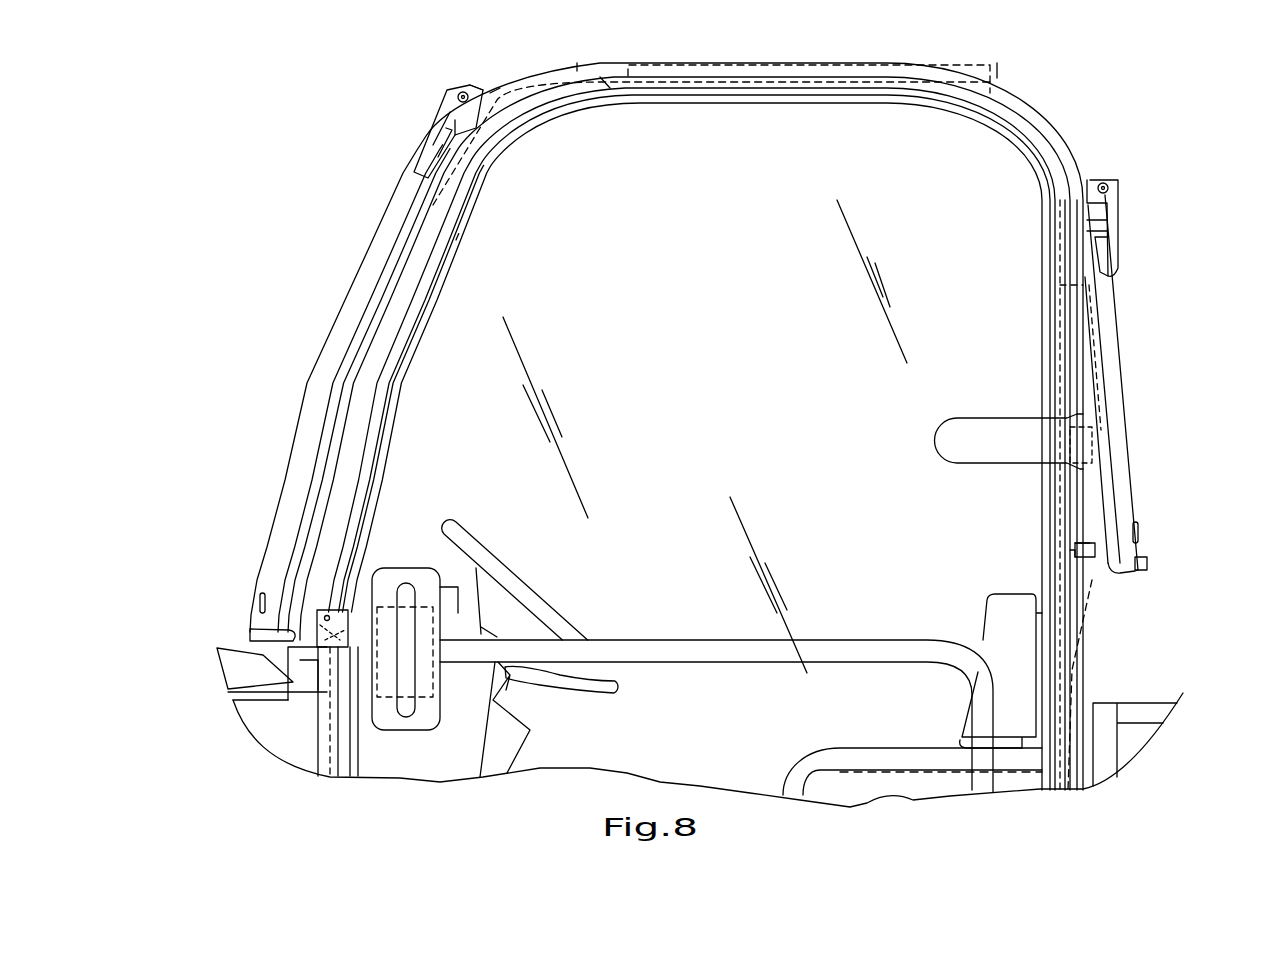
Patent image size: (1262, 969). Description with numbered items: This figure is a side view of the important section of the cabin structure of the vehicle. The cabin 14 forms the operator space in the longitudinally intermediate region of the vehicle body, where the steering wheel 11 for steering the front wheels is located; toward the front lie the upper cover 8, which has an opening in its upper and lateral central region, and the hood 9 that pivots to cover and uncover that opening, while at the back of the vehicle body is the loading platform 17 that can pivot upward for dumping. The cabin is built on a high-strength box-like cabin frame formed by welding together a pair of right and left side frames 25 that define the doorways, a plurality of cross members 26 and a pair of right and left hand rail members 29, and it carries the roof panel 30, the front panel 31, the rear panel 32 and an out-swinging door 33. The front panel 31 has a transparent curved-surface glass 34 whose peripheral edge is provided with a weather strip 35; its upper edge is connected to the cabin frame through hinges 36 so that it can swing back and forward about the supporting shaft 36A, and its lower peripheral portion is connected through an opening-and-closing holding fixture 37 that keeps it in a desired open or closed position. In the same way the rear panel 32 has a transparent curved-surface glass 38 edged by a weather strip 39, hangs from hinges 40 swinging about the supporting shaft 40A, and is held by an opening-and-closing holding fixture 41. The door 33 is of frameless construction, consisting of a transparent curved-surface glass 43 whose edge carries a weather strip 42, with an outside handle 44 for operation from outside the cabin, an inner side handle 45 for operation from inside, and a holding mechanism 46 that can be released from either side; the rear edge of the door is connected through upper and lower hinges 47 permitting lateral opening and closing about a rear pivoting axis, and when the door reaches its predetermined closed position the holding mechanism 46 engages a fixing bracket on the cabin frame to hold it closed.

The upper cover 8 is at (273, 737).
The hood 9 is at (236, 655).
The steering wheel 11 is at (497, 617).
The cabin 14 is at (290, 125).
The loading platform 17 is at (1135, 703).
The side frame 25 is at (410, 270).
The cross member 26 is at (506, 92).
The hand rail member 29 is at (812, 764).
The roof panel 30 is at (695, 58).
The front panel 31 is at (297, 388).
The rear panel 32 is at (1133, 395).
The door 33 is at (795, 125).
The transparent curved-surface glass 34 is at (335, 326).
The weather strip 35 is at (306, 482).
The hinge 36 is at (432, 137).
The supporting shaft 36A is at (459, 94).
The opening-and-closing holding fixture 37 is at (316, 620).
The transparent curved-surface glass 38 is at (1121, 352).
The weather strip 39 is at (1140, 573).
The hinge 40 is at (1120, 226).
The supporting shaft 40A is at (1107, 183).
The opening-and-closing holding fixture 41 is at (1092, 540).
The weather strip 42 is at (715, 100).
The transparent curved-surface glass 43 is at (878, 278).
The outside handle 44 is at (407, 575).
The inner side handle 45 is at (820, 640).
The holding mechanism 46 is at (436, 690).
The hinge 47 is at (940, 441).